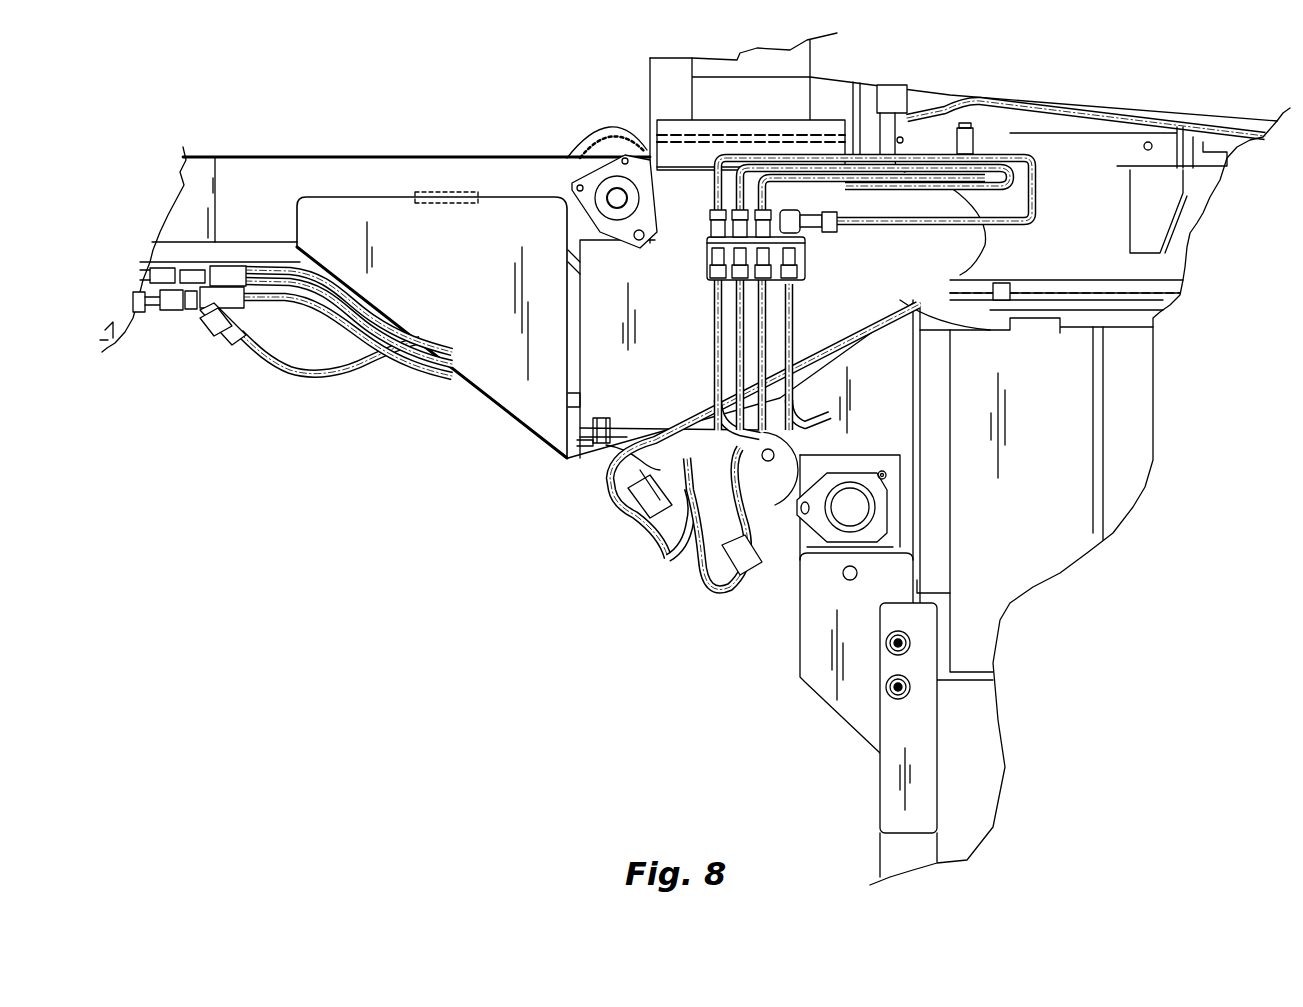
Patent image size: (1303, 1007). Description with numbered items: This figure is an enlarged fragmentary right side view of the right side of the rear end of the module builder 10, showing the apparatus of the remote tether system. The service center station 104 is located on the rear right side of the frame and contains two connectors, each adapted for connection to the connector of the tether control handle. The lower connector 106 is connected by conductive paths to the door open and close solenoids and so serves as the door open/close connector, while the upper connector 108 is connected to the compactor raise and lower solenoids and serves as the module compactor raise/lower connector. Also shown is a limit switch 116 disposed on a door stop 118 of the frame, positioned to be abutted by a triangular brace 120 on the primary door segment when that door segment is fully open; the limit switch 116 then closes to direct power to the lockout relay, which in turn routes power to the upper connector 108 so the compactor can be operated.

The agricultural combine header drive system 10 is at (525, 134).
The service center station 104 is at (876, 714).
The lower connector 106 is at (912, 692).
The upper connector 108 is at (910, 638).
The limit switch 116 is at (566, 456).
The door stop 118 is at (597, 456).
The triangular brace 120 is at (482, 395).